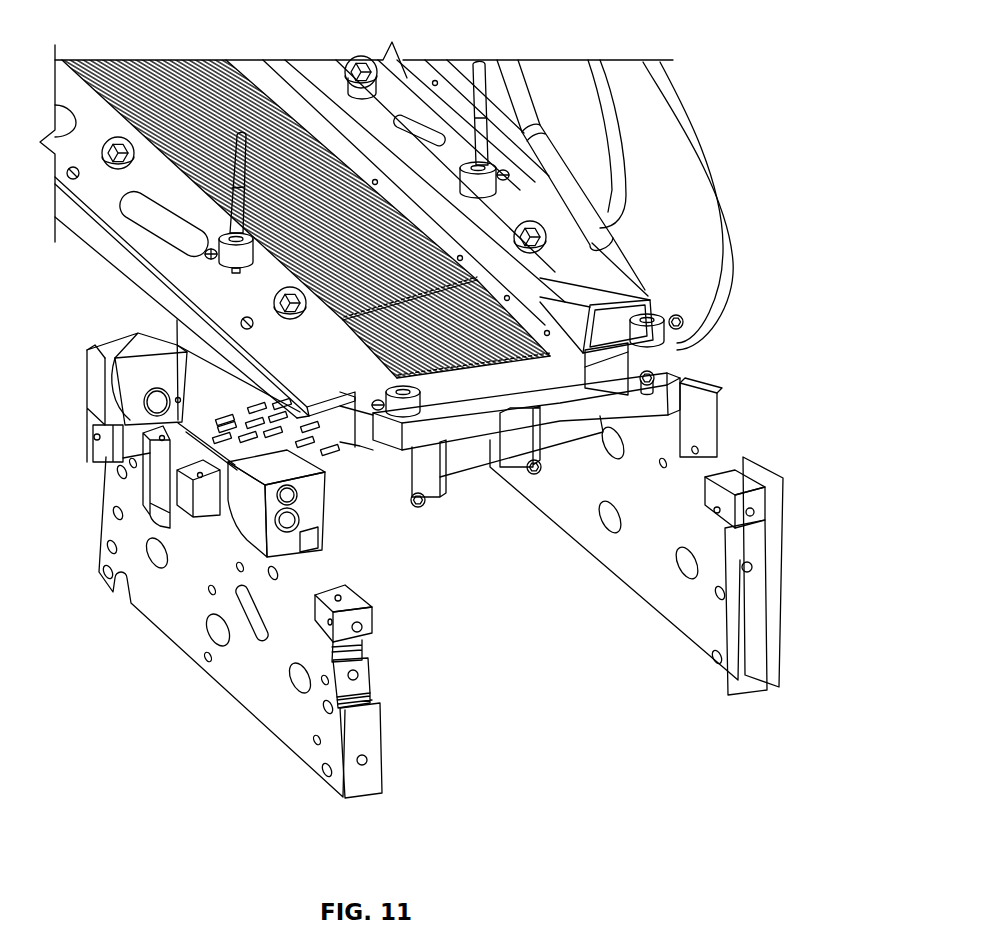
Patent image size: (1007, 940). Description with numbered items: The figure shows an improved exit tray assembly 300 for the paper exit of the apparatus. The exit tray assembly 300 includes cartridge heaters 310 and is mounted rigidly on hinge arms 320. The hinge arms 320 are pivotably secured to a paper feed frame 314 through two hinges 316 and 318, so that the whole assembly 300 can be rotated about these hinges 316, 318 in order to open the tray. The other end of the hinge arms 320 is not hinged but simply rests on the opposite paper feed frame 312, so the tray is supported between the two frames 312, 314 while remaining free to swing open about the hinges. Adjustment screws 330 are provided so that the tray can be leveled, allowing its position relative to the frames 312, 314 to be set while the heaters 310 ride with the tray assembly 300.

The exit tray assembly 300 is at (177, 267).
The cartridge heaters 310 is at (600, 224).
The paper feed frame 312 is at (637, 577).
The paper feed frame 314 is at (370, 733).
The hinge 316 is at (297, 520).
The hinge 318 is at (157, 402).
The hinge arms 320 is at (483, 460).
The adjustment screws 330 is at (653, 372).